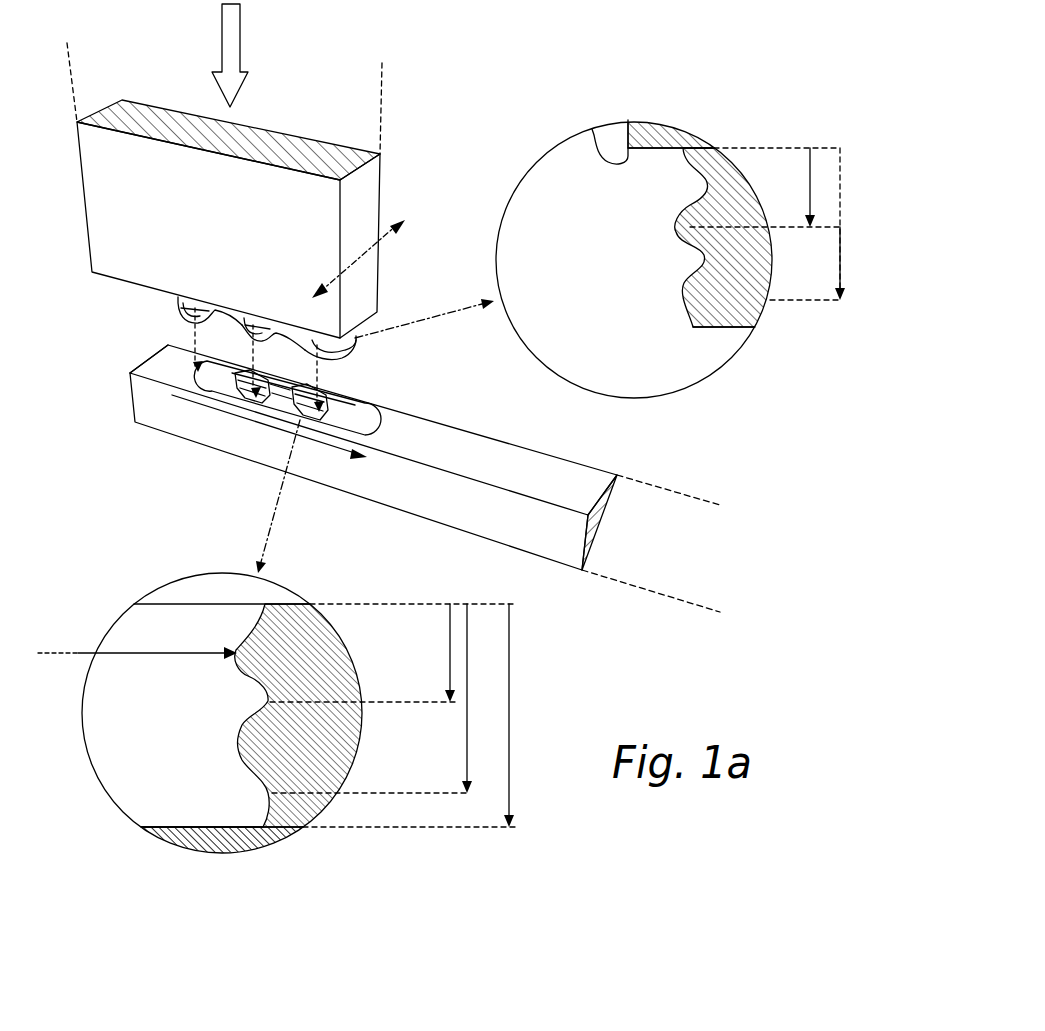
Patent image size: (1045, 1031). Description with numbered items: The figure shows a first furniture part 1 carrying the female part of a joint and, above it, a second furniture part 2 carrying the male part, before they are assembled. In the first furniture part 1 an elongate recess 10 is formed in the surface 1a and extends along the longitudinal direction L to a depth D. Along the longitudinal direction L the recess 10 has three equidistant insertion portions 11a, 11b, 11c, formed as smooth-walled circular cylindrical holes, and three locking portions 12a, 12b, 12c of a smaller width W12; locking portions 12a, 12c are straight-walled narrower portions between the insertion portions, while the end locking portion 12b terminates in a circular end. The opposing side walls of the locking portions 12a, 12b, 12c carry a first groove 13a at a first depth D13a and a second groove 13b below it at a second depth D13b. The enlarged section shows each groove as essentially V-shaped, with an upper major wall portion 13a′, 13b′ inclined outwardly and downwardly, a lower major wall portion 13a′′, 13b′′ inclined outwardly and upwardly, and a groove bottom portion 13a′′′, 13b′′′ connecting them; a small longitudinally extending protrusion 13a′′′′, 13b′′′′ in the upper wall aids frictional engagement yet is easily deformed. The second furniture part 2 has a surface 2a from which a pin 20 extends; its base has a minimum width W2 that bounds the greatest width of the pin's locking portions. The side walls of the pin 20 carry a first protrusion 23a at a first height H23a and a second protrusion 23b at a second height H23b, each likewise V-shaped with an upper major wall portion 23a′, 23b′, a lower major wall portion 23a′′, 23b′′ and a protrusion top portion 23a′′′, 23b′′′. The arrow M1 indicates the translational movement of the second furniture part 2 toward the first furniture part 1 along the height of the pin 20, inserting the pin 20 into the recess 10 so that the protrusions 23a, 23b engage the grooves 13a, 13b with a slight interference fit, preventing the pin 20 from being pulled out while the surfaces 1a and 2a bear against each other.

The movement M1 is at (249, 55).
The second furniture part 2 is at (360, 195).
The surface 2a is at (600, 152).
The minimum width W2 is at (374, 259).
The locking portion 12a is at (178, 308).
The end locking portion 12b is at (383, 403).
The locking portion 12c is at (290, 382).
The first furniture part 1 is at (587, 474).
The surface 1a is at (188, 603).
The elongate recess 10 is at (181, 369).
The insertion portion 11a is at (232, 373).
The insertion portion 11b is at (353, 403).
The insertion portion 11c is at (260, 398).
The longitudinal direction L is at (188, 402).
The pin 20 is at (770, 198).
The first protrusion 23a is at (679, 217).
The upper major wall portion 23a′ is at (693, 203).
The lower major wall portion 23a′′ is at (683, 252).
The protrusion top portion 23a′′′ is at (675, 228).
The second protrusion 23b is at (678, 306).
The upper major wall portion 23b′ is at (703, 282).
The lower major wall portion 23b′′ is at (693, 327).
The protrusion top portion 23b′′′ is at (679, 306).
The first height H23a is at (805, 165).
The second height H23b is at (838, 302).
The width of the locking portions W12 is at (50, 650).
The first groove 13a is at (231, 707).
The upper major wall portion 13a′ is at (262, 688).
The lower major wall portion 13a′′ is at (248, 720).
The groove bottom portion 13a′′′ is at (267, 700).
The small longitudinally extending protrusion 13a′′′′ is at (250, 668).
The second groove 13b is at (231, 800).
The upper major wall portion 13b′ is at (258, 773).
The lower major wall portion 13b′′ is at (268, 827).
The groove bottom portion 13b′′′ is at (277, 795).
The small longitudinally extending protrusion 13b′′′′ is at (240, 770).
The first depth D13a is at (392, 653).
The second depth D13b is at (372, 698).
The depth D is at (420, 715).